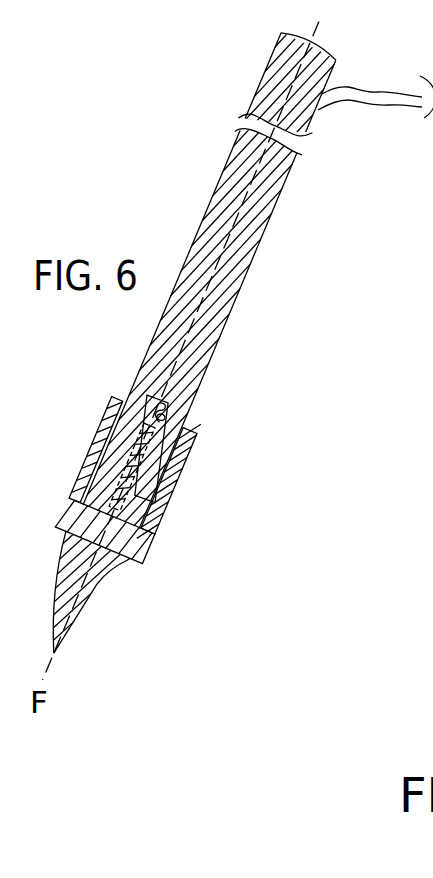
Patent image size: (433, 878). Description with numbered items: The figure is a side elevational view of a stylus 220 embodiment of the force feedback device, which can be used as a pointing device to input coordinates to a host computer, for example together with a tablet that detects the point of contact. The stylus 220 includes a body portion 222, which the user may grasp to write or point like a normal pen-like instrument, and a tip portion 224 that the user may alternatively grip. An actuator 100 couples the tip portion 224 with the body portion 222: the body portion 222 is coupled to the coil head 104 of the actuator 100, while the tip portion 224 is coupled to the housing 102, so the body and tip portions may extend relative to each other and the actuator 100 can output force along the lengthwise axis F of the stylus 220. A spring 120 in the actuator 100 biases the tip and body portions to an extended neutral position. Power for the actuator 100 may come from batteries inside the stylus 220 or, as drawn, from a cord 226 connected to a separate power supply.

The actuator 100 is at (143, 480).
The housing 102 is at (157, 513).
The coil head 104 is at (118, 430).
The spring 120 is at (167, 409).
The stylus 220 is at (276, 241).
The body portion 222 is at (217, 212).
The tip portion 224 is at (98, 583).
The cord 226 is at (367, 93).